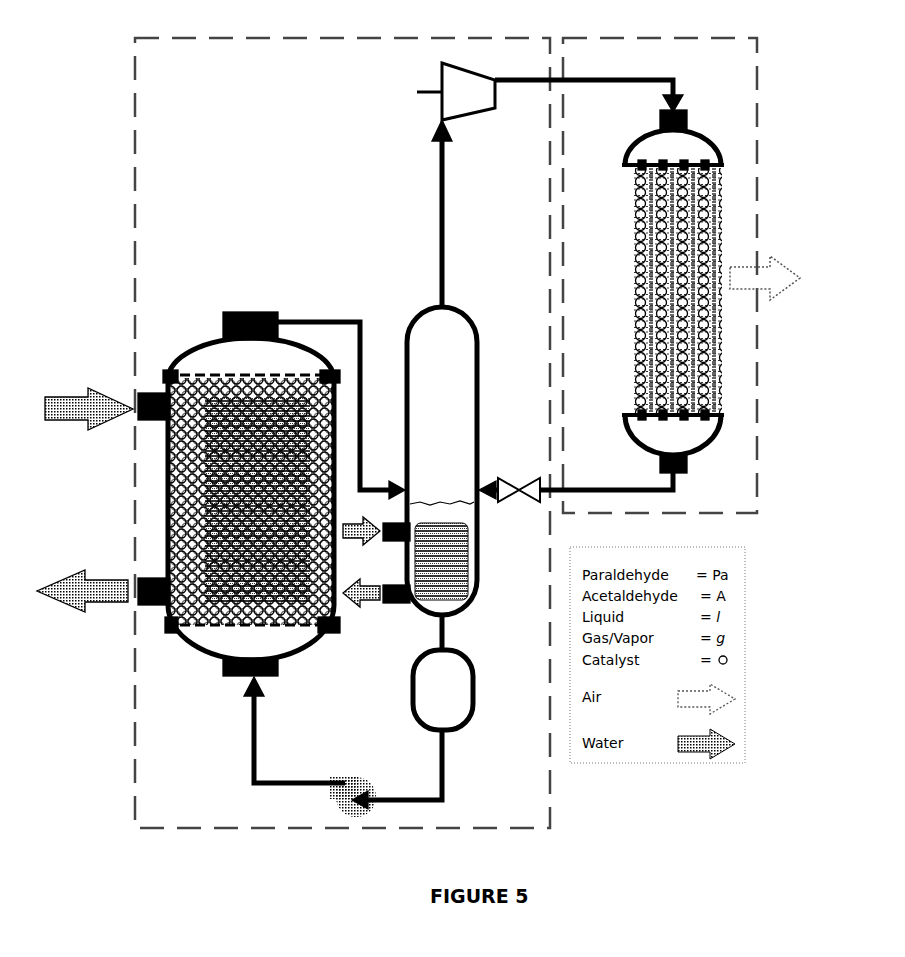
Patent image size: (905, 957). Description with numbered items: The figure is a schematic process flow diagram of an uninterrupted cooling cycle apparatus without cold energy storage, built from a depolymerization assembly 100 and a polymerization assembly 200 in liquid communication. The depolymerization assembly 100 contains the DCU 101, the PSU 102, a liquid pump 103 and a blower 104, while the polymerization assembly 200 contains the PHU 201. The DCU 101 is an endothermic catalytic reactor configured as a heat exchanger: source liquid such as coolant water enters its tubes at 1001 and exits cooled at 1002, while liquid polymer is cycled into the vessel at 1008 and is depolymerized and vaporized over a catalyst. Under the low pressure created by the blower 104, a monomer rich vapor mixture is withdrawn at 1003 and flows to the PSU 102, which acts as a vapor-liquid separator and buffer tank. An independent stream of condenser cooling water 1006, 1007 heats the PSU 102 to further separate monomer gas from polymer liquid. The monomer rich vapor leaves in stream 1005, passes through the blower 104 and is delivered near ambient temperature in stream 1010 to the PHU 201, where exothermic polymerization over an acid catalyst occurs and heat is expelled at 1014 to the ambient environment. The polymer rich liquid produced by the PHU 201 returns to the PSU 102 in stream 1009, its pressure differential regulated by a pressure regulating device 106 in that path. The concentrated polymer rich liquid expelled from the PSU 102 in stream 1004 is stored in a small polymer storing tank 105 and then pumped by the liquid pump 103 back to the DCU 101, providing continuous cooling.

The depolymerization assembly 100 is at (342, 433).
The polymerization assembly 200 is at (660, 275).
The DCU 101 is at (239, 494).
The PSU 102 is at (430, 461).
The liquid pump 103 is at (353, 783).
The blower 104 is at (444, 91).
The polymer storing tank 105 is at (443, 672).
The valve 106 is at (510, 478).
The PHU 201 is at (654, 291).
The source liquid 1001 is at (89, 395).
The source liquid exit 1002 is at (82, 578).
The monomer rich vapor stream 1003 is at (341, 395).
The polymer rich liquid stream 1004 is at (422, 769).
The monomer rich vapor stream 1005 is at (418, 213).
The source liquid inlet to PSU 1006 is at (367, 545).
The source liquid outlet from PSU 1007 is at (367, 610).
The polymer feed stream 1008 is at (272, 730).
The polymer rich liquid mixture stream 1009 is at (606, 475).
The vapor stream to PHU 1010 is at (589, 81).
The heat rejection 1014 is at (782, 265).